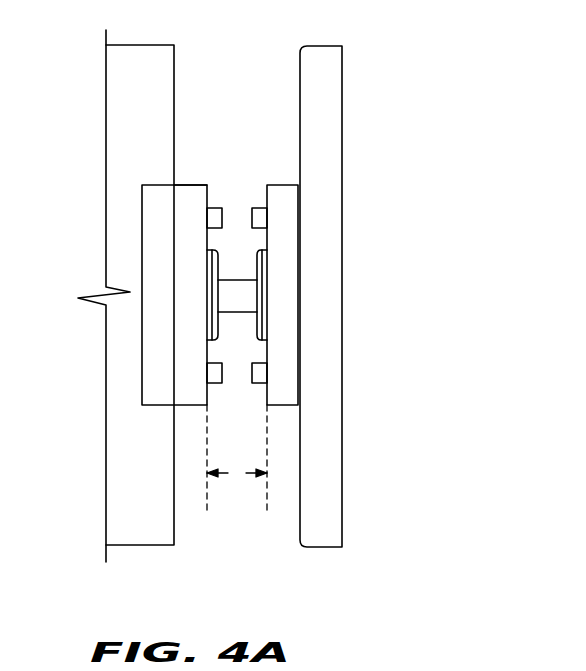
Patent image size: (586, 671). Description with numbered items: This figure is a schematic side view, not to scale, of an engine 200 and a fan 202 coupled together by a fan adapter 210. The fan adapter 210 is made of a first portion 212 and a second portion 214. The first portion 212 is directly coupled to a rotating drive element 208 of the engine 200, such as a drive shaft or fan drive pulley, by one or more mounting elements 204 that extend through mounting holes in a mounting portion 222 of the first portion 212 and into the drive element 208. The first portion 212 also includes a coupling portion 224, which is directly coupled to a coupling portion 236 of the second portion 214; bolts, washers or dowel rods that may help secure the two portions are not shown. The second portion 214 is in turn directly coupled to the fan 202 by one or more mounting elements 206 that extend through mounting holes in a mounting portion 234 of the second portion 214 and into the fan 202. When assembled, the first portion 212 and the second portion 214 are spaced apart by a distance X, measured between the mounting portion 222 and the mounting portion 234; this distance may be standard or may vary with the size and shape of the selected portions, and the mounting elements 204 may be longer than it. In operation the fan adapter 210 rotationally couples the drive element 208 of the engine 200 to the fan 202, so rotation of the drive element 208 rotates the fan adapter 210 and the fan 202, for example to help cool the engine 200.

The engine 200 is at (144, 45).
The fan 202 is at (343, 120).
The mounting elements 204 is at (137, 312).
The mounting elements 206 is at (261, 207).
The drive element 208 is at (142, 238).
The fan adapter 210 is at (240, 383).
The first portion 212 is at (137, 246).
The second portion 214 is at (321, 234).
The mounting portion 222 is at (178, 185).
The coupling portion 224 is at (230, 270).
The mounting portion 234 is at (279, 185).
The coupling portion 236 is at (257, 336).